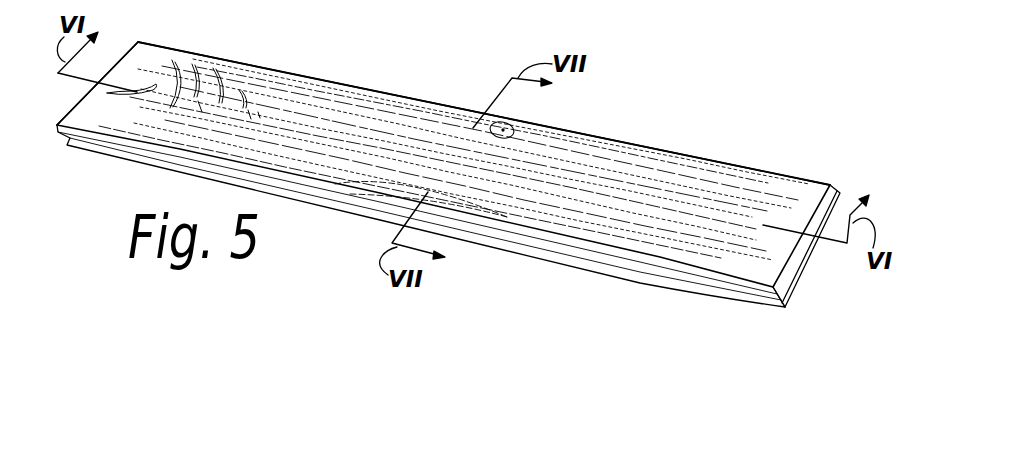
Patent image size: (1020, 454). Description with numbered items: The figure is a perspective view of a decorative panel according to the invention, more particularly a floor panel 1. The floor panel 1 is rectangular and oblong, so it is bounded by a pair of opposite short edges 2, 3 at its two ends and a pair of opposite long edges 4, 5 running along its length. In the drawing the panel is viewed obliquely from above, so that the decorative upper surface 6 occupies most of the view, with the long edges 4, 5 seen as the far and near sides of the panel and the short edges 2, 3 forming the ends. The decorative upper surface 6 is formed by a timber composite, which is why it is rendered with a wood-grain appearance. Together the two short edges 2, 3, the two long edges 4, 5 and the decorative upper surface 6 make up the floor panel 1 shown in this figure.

The floor panel 1 is at (690, 133).
The short edge 2 is at (68, 104).
The short edge 3 is at (836, 182).
The long edge 4 is at (754, 169).
The long edge 5 is at (623, 276).
The decorative upper surface 6 is at (297, 120).